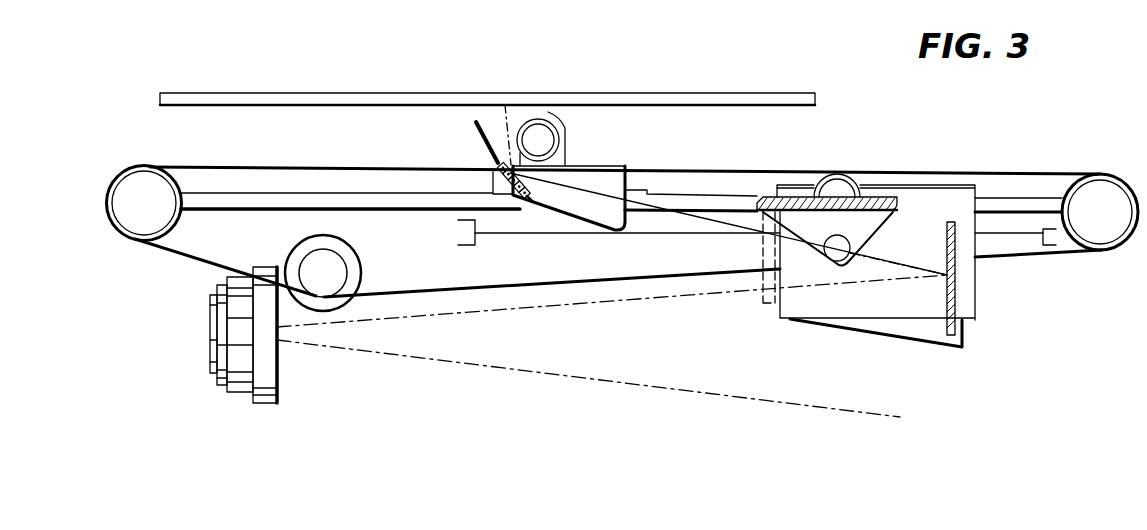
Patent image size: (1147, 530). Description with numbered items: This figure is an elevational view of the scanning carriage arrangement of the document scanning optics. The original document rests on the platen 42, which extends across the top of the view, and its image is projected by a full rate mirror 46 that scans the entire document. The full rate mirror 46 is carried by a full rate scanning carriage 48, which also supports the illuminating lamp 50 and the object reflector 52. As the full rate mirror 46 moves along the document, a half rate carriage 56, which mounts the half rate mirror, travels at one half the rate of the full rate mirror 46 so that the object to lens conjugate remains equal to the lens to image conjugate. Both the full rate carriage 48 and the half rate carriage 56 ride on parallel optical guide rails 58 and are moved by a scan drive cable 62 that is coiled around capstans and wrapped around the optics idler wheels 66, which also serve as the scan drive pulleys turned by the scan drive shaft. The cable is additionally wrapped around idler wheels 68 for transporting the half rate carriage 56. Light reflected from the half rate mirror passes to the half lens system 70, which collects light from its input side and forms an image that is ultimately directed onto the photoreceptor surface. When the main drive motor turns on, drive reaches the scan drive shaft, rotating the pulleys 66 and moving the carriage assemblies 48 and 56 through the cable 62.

The platen 42 is at (330, 98).
The full rate mirror 46 is at (513, 200).
The full rate scanning carriage 48 is at (627, 166).
The illuminating lamp 50 is at (550, 140).
The object reflector 52 is at (477, 125).
The half rate carriage 56 is at (872, 226).
The optical guide rails 58 is at (265, 200).
The scan drive cable 62 is at (596, 279).
The optics idler wheels 66 is at (1093, 185).
The idler wheels 68 is at (837, 174).
The half lens system 70 is at (210, 310).